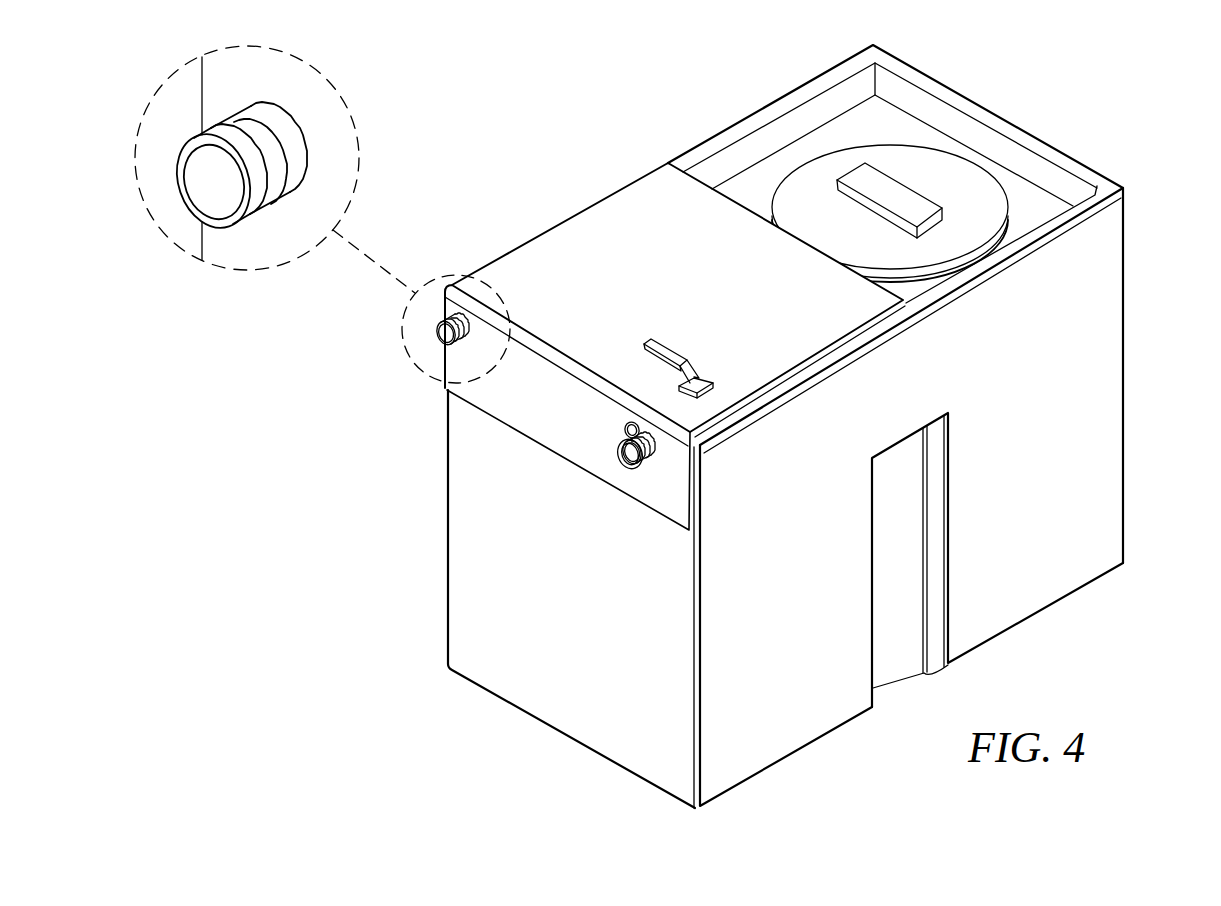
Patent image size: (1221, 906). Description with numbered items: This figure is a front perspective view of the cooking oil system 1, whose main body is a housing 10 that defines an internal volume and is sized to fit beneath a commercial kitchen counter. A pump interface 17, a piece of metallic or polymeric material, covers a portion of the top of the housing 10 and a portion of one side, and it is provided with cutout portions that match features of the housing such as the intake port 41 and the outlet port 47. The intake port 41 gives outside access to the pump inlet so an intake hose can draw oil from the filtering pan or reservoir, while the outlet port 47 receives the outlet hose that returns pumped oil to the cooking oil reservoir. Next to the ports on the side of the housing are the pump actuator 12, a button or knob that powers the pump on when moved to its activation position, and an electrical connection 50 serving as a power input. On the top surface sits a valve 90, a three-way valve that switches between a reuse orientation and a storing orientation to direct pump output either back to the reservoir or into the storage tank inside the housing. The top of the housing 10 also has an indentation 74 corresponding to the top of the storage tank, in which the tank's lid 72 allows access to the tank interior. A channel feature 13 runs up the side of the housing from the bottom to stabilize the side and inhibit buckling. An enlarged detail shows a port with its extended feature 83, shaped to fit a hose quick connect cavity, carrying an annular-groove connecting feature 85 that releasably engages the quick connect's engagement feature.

The system 1 is at (669, 426).
The housing 10 is at (807, 426).
The pump actuator 12 is at (624, 432).
The channel feature 13 is at (890, 650).
The pump interface 17 is at (653, 364).
The intake port 41 is at (238, 212).
The outlet port 47 is at (668, 468).
The electrical connection 50 is at (624, 460).
The lid 72 is at (940, 165).
The indentation 74 is at (826, 132).
The extended feature 83 is at (253, 214).
The connecting feature 85 is at (273, 190).
The valve 90 is at (700, 380).